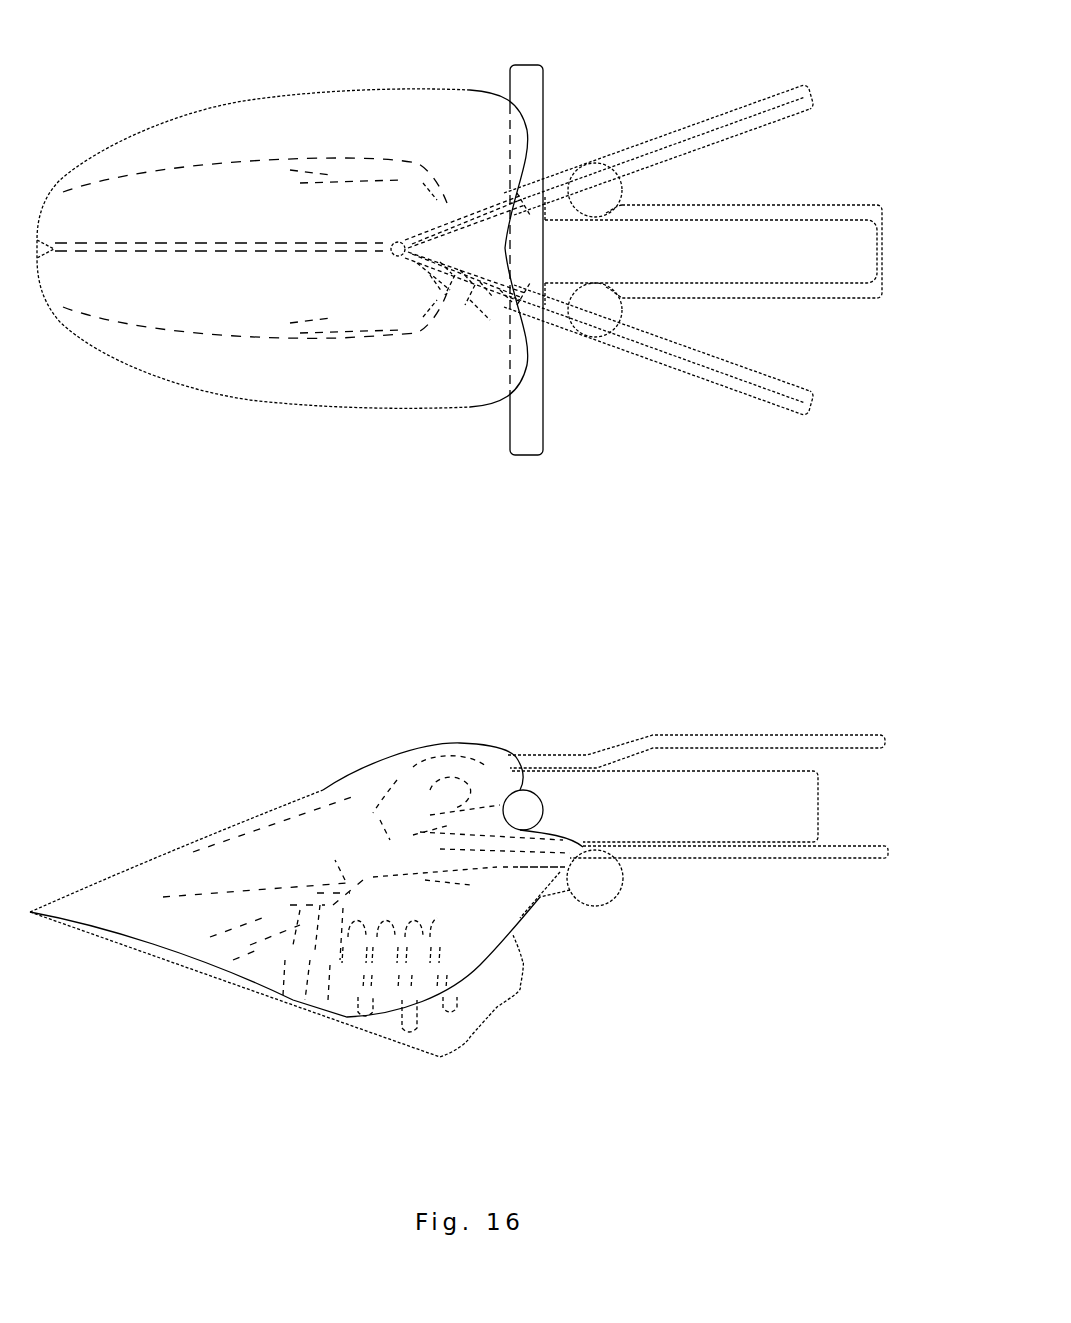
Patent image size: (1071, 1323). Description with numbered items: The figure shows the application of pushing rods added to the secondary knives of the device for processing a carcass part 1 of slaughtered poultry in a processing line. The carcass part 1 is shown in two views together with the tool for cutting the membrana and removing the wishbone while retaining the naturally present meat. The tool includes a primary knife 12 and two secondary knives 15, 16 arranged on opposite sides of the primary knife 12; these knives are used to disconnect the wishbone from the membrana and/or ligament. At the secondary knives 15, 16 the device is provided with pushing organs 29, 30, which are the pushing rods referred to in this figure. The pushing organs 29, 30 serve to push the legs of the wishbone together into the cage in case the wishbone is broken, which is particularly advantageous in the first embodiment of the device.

The carcass part 1 is at (161, 392).
The primary knife 12 is at (757, 190).
The secondary knife 15 is at (650, 130).
The secondary knife 16 is at (781, 420).
The pushing organ 29 is at (556, 91).
The pushing organ 30 is at (559, 441).